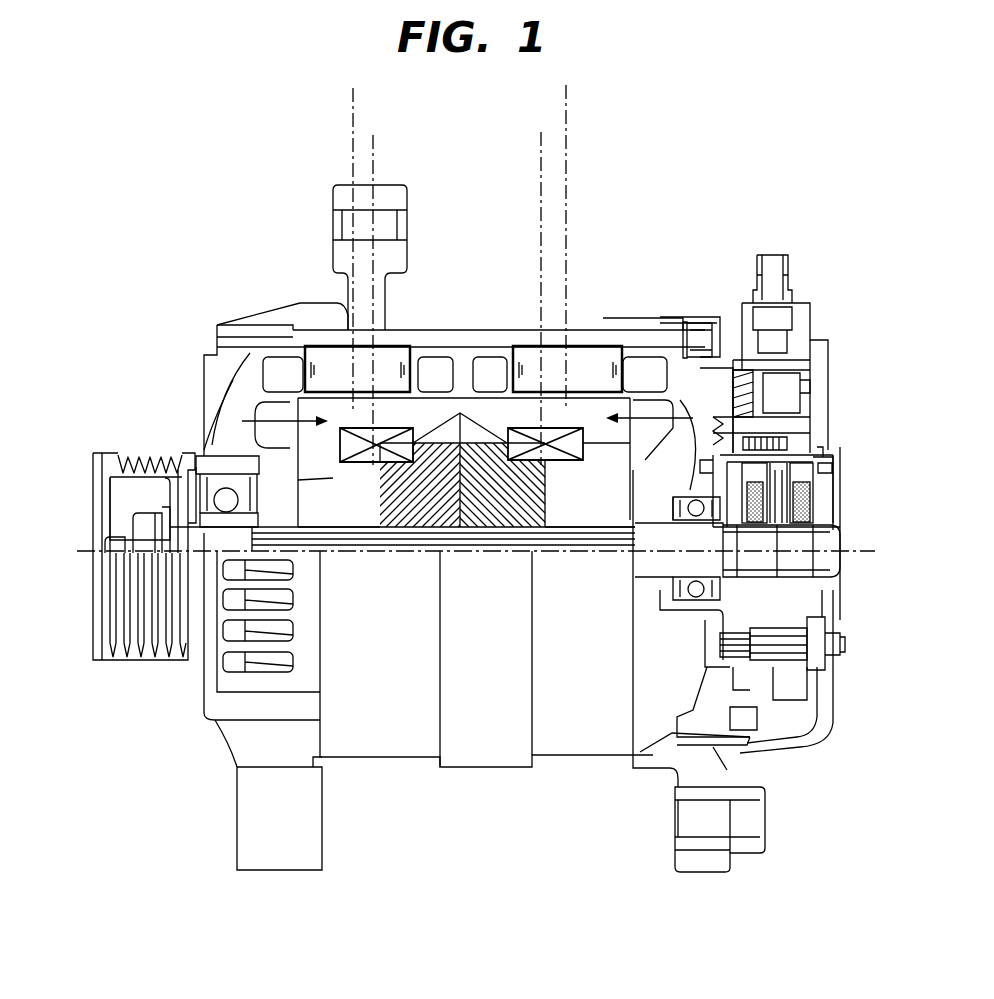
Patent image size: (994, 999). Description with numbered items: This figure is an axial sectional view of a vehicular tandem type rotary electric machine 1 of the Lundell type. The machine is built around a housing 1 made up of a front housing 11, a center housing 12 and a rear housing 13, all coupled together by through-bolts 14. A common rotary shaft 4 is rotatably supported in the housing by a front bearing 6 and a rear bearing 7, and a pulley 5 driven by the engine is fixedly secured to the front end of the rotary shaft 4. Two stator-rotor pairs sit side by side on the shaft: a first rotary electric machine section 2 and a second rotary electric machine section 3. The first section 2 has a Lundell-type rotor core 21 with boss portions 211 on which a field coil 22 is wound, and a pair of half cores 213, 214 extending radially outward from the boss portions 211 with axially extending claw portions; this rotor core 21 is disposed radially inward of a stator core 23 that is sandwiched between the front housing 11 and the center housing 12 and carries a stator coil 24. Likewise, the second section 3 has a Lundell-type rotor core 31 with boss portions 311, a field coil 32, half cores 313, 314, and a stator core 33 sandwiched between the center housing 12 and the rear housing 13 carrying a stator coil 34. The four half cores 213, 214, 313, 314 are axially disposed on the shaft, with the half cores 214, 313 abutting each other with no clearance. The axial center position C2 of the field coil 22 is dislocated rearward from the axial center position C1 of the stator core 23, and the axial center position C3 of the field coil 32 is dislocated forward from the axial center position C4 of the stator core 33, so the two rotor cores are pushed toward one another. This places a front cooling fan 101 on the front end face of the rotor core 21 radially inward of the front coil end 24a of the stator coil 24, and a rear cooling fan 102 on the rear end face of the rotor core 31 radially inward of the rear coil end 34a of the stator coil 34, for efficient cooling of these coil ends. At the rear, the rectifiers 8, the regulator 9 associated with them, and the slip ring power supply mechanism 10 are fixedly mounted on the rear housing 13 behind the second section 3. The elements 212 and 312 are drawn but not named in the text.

The vehicular tandem type rotary electric machine 1 is at (268, 312).
The first rotary electric machine section 2 is at (435, 320).
The second rotary electric machine section 3 is at (531, 318).
The rotary shaft 4 is at (203, 450).
The pulley 5 is at (117, 456).
The front bearing 6 is at (213, 480).
The rear bearing 7 is at (687, 523).
The rectifiers 8 is at (845, 623).
The regulator 9 is at (845, 410).
The slip ring power supply mechanism 10 is at (855, 492).
The front housing 11 is at (205, 372).
The center housing 12 is at (485, 364).
The rear housing 13 is at (716, 355).
The through-bolts 14 is at (697, 330).
The Lundell-type rotor core 21 is at (345, 515).
The boss portions 211 is at (358, 400).
The first disc portion 212 is at (398, 365).
The half core 213 is at (295, 490).
The half core 214 is at (418, 465).
The field coil 22 is at (370, 465).
The stator core 23 is at (396, 365).
The stator coil 24 is at (413, 368).
The front coil end 24a is at (277, 372).
The Lundell-type rotor core 31 is at (575, 505).
The boss portions 311 is at (580, 553).
The second disc portion 312 is at (593, 342).
The half core 313 is at (485, 503).
The half core 314 is at (593, 505).
The field coil 32 is at (515, 530).
The stator core 33 is at (577, 358).
The stator coil 34 is at (520, 345).
The rear coil end 34a is at (640, 358).
The front cooling fan 101 is at (317, 483).
The rear cooling fan 102 is at (655, 433).
The axial center position of the first stator coil C1 is at (352, 236).
The axial center position of the first field coil C2 is at (372, 288).
The axial center position of the second field coil C3 is at (541, 287).
The axial center position of the second stator coil C4 is at (564, 235).